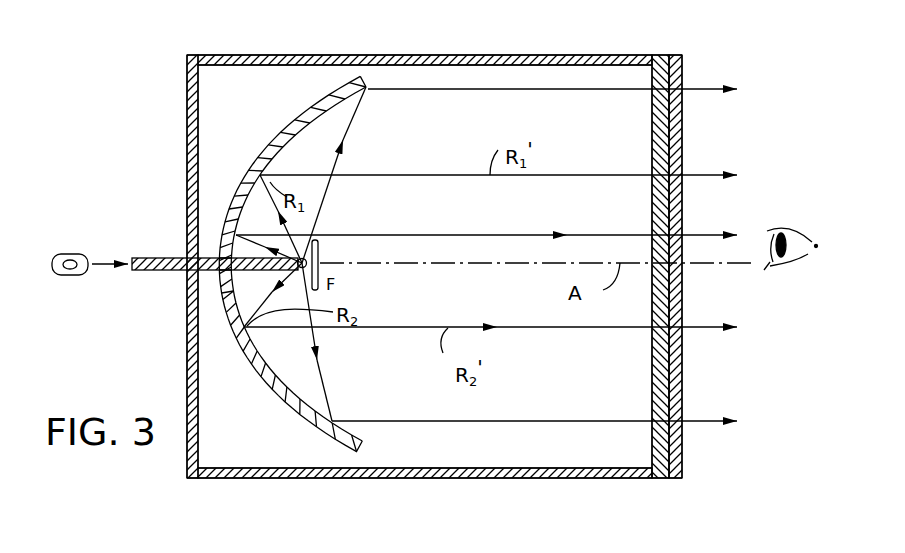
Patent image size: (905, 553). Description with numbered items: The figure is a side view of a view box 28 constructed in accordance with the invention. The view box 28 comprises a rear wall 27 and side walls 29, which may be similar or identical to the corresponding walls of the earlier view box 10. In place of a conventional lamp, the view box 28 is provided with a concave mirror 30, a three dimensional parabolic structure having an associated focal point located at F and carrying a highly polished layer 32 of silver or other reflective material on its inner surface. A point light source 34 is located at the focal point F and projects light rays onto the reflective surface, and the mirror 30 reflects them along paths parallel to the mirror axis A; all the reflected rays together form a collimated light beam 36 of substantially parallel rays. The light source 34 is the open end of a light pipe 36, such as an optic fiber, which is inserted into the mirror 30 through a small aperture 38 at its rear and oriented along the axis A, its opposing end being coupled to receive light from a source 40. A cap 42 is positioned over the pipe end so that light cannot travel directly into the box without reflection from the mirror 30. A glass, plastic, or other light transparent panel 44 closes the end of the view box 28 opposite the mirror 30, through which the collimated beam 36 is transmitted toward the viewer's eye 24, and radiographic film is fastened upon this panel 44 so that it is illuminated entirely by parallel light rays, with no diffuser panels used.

The view box 10 is at (436, 269).
The eye of viewer 24 is at (782, 268).
The rear wall 27 is at (214, 280).
The view box 28 is at (399, 269).
The side walls 29 is at (298, 56).
The concave mirror 30 is at (241, 264).
The polished layer 32 is at (322, 122).
The point light source 34 is at (320, 272).
The light pipe 36 is at (157, 258).
The aperture 38 is at (214, 302).
The source 40 is at (73, 254).
The cap 42 is at (354, 249).
The light transparent panel 44 is at (660, 470).